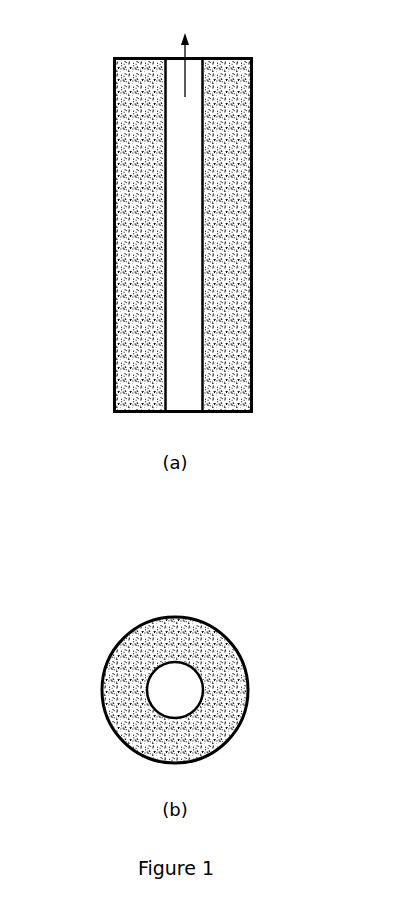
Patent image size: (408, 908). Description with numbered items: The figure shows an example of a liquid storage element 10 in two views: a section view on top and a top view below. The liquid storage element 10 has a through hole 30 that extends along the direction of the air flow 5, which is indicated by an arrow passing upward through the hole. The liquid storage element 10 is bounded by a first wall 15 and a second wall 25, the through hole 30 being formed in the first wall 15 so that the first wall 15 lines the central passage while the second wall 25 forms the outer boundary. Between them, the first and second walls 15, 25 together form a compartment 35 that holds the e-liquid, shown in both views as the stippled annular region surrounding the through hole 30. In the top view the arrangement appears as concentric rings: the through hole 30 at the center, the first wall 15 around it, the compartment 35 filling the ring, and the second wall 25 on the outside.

The air flow 5 is at (202, 62).
The liquid storage element 10 is at (172, 632).
The first wall 15 is at (205, 238).
The second wall 25 is at (253, 265).
The through hole 30 is at (192, 690).
The compartment 35 is at (227, 388).